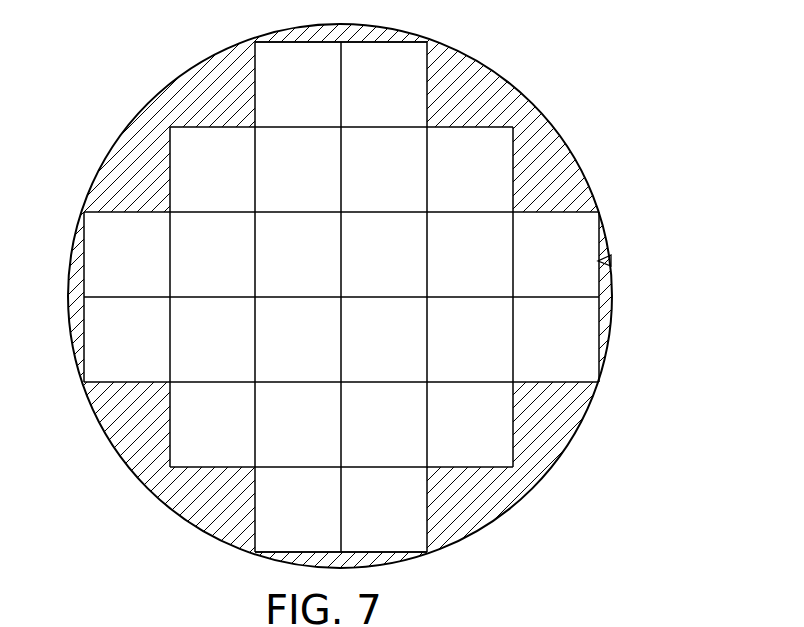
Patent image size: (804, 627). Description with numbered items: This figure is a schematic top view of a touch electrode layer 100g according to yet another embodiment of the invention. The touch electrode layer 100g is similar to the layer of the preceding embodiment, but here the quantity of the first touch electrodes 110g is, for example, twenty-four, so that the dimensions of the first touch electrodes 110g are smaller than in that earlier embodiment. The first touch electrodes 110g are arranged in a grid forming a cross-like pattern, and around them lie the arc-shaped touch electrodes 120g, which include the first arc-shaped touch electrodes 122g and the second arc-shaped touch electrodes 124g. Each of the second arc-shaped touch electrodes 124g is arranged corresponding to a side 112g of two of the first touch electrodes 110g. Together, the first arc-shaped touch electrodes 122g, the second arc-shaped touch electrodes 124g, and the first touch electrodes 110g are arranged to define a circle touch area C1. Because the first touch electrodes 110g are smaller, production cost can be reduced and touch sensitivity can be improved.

The circle touch area C1 is at (135, 75).
The touch electrode layer 100g is at (736, 598).
The first touch electrodes 110g is at (490, 178).
The side 112g is at (608, 259).
The arc-shaped touch electrodes 120g is at (630, 22).
The first arc-shaped touch electrodes 122g is at (530, 134).
The second arc-shaped touch electrodes 124g is at (384, 27).